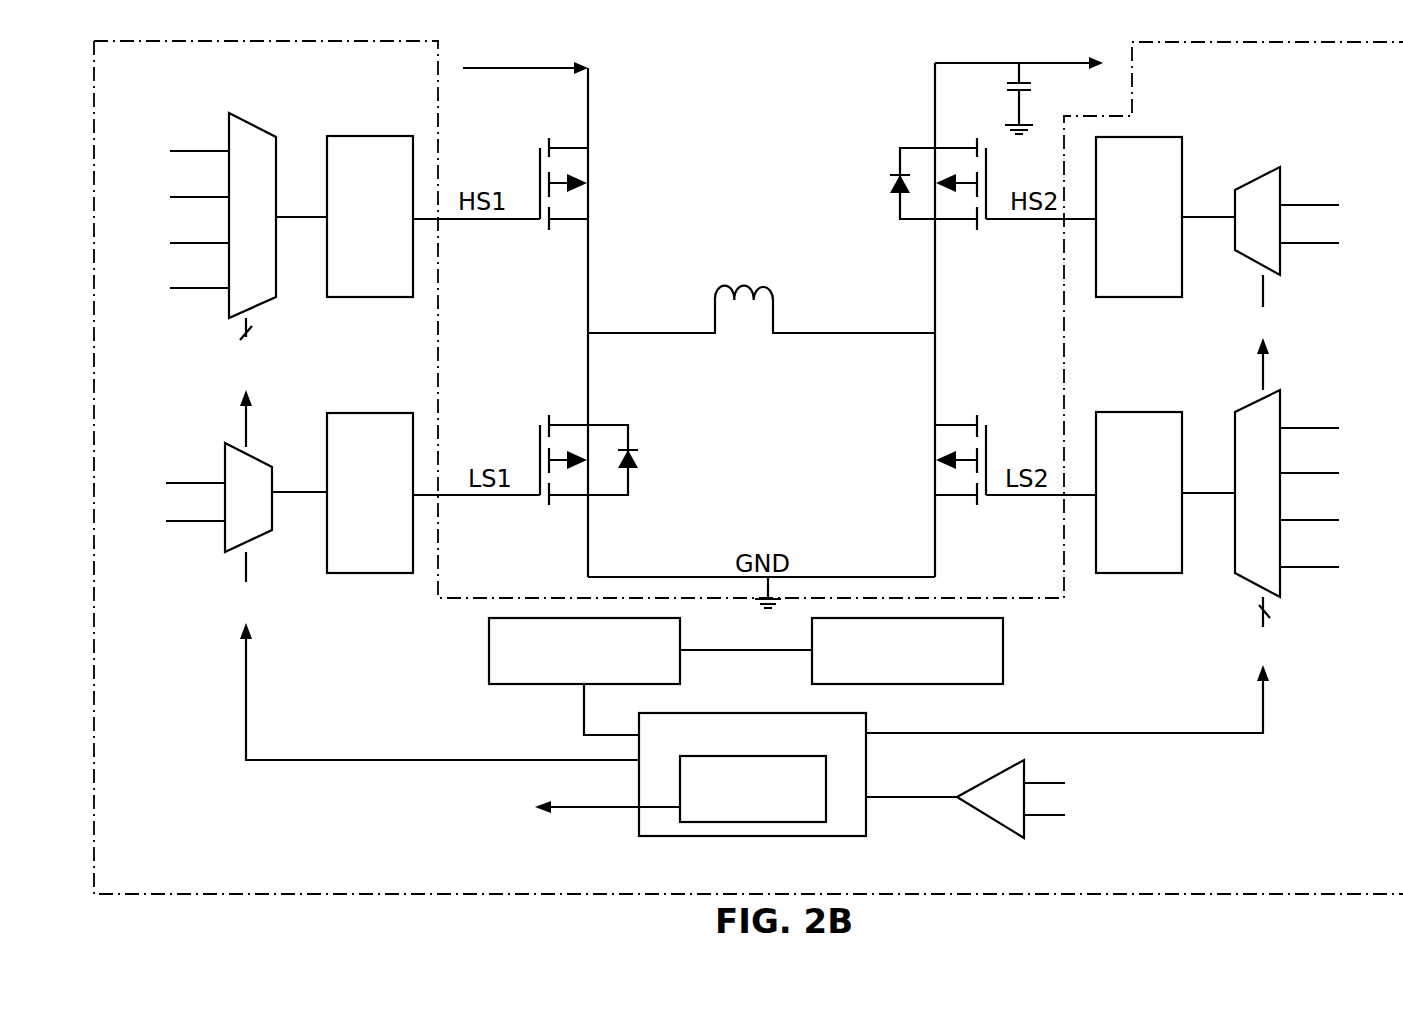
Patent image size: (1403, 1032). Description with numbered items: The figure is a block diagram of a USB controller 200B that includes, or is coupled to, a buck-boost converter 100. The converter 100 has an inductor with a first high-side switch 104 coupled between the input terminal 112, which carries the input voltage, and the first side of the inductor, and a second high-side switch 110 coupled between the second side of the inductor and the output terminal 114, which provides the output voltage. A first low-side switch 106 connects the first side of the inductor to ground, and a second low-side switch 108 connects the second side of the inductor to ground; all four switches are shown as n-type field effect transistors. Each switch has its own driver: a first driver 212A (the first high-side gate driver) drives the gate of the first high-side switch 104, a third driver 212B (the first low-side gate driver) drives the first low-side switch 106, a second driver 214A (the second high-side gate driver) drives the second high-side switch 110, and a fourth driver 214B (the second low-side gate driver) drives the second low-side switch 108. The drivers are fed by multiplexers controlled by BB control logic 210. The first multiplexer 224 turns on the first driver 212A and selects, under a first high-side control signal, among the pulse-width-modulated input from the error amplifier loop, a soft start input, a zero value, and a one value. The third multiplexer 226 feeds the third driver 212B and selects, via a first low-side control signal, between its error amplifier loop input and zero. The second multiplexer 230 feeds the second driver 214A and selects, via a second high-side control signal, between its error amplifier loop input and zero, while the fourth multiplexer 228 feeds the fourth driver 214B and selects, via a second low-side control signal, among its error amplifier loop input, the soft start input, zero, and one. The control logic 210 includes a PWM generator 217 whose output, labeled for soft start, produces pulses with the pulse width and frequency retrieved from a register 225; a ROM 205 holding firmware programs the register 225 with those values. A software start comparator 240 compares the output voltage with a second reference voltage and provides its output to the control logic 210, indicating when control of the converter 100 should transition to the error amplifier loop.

The buck-boost converter 100 is at (793, 190).
The first high-side switch 104 is at (540, 167).
The first low-side switch 106 is at (540, 432).
The second low-side switch 108 is at (986, 445).
The second high-side switch 110 is at (986, 173).
The input terminal 112 is at (550, 68).
The output terminal 114 is at (1040, 63).
The USB controller 200B is at (1357, 99).
The programmable read-only memory (ROM) 205 is at (891, 677).
The BB control logic 210 is at (828, 747).
The first driver 212A is at (347, 269).
The third driver 212B is at (347, 547).
The second driver 214A is at (1116, 272).
The fourth driver 214B is at (1116, 547).
The pulse-width modulation (PWM) generator 217 is at (770, 817).
The first multiplexer 224 is at (255, 132).
The register 225 is at (568, 677).
The third multiplexer 226 is at (225, 532).
The fourth multiplexer 228 is at (1280, 390).
The second multiplexer 230 is at (1265, 172).
The software start (SS) comparator 240 is at (990, 818).